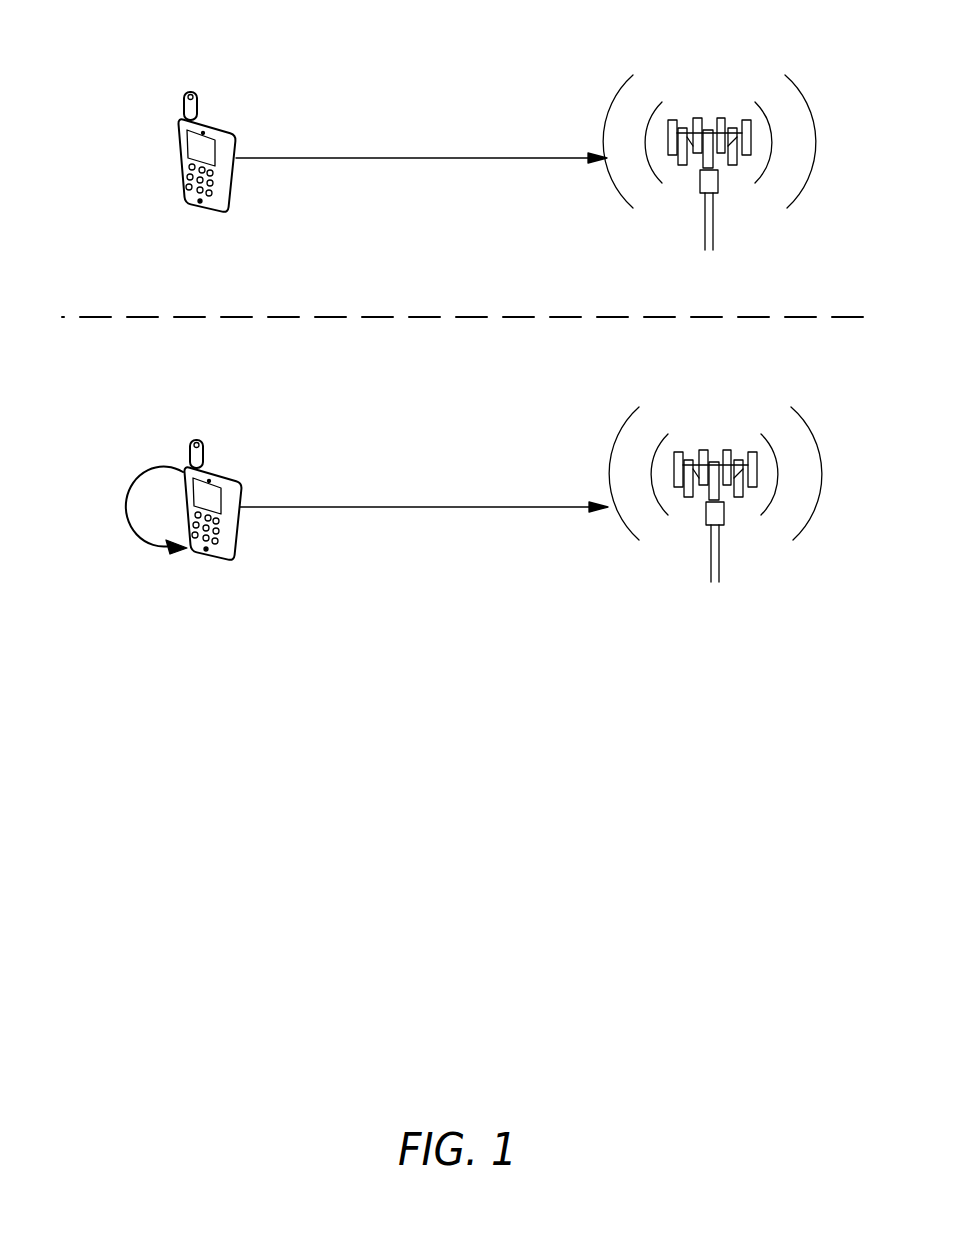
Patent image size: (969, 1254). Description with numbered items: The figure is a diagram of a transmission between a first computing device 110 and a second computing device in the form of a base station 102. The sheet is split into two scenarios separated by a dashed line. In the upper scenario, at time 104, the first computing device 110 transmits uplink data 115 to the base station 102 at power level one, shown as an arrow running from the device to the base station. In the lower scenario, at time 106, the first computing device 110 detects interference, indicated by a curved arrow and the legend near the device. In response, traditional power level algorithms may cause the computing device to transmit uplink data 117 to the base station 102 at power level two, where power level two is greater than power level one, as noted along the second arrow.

The base station 102 is at (718, 183).
The time 104 is at (421, 82).
The time 106 is at (320, 483).
The first computing device 110 is at (206, 124).
The uplink data 115 is at (493, 158).
The uplink data 117 is at (520, 507).